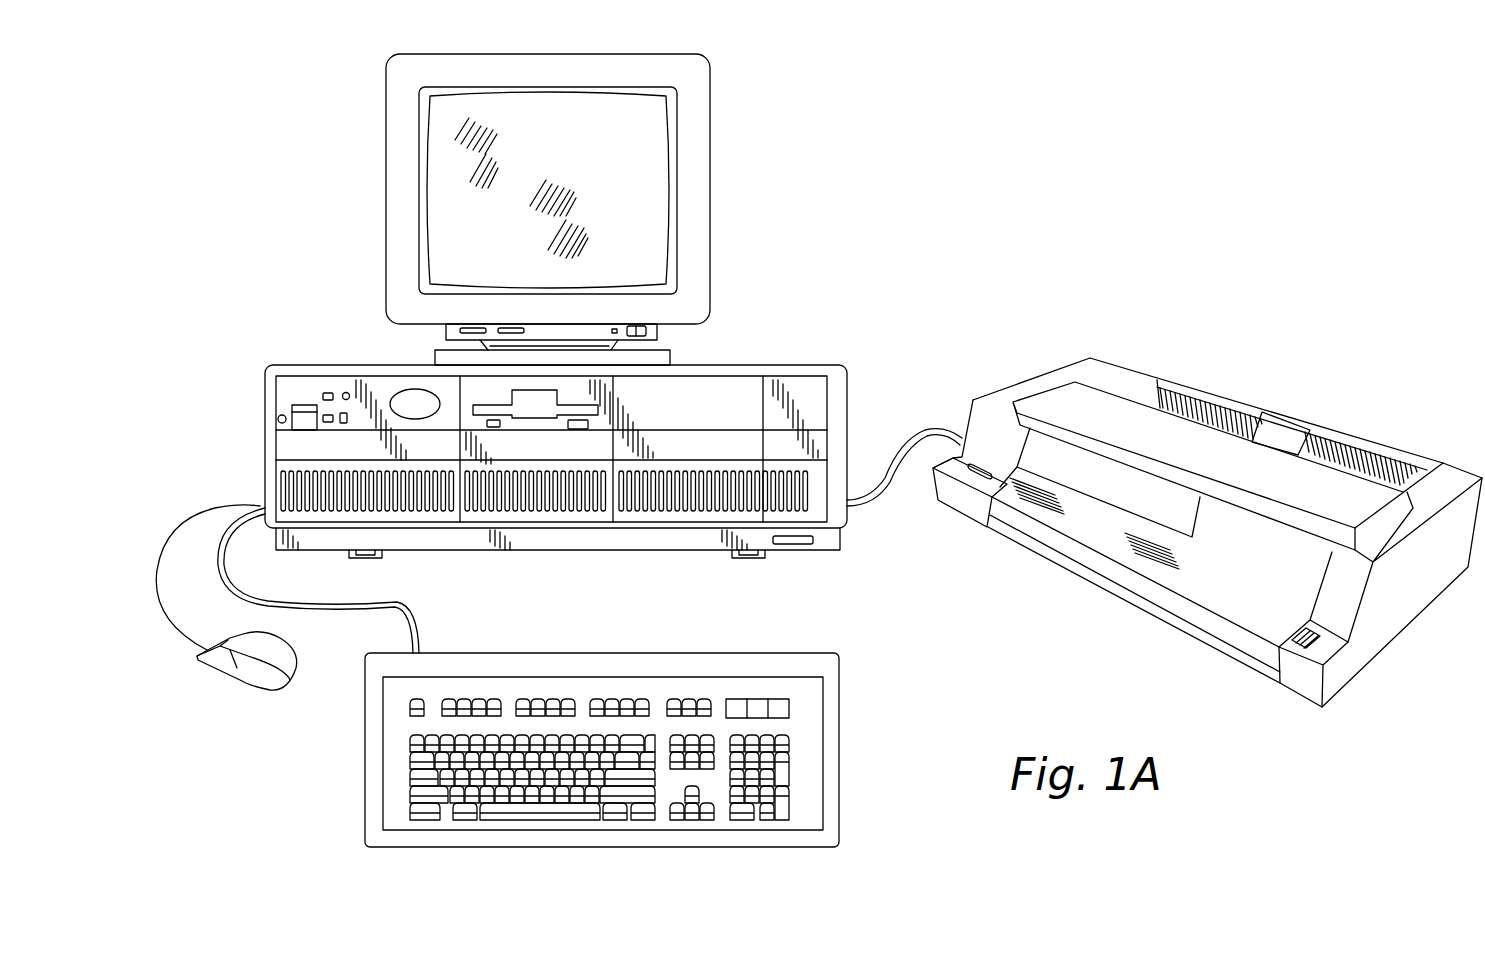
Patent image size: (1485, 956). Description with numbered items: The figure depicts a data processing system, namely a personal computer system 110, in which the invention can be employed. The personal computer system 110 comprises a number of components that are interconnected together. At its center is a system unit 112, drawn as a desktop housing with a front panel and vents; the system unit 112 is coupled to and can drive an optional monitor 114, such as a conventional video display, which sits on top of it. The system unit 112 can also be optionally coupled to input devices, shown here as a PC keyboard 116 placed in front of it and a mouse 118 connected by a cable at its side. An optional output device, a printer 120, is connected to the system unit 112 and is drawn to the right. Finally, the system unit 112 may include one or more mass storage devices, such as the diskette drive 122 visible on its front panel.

The personal computer system 110 is at (958, 202).
The system unit 112 is at (771, 355).
The monitor 114 is at (720, 221).
The PC keyboard 116 is at (714, 641).
The mouse 118 is at (212, 672).
The printer 120 is at (1035, 366).
The diskette drive 122 is at (542, 418).